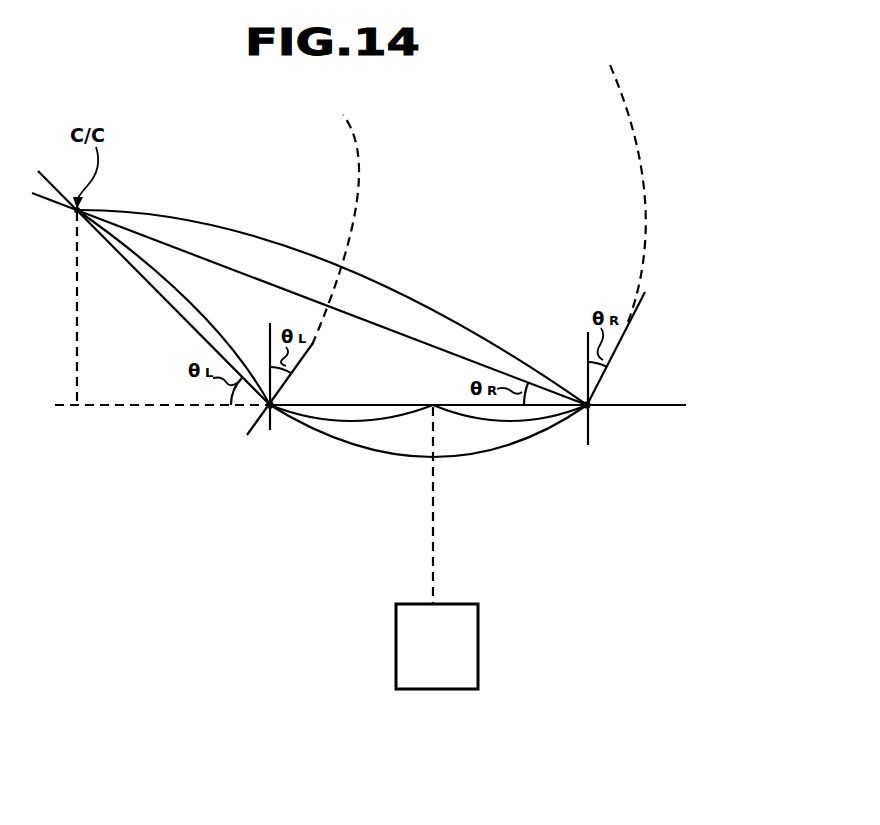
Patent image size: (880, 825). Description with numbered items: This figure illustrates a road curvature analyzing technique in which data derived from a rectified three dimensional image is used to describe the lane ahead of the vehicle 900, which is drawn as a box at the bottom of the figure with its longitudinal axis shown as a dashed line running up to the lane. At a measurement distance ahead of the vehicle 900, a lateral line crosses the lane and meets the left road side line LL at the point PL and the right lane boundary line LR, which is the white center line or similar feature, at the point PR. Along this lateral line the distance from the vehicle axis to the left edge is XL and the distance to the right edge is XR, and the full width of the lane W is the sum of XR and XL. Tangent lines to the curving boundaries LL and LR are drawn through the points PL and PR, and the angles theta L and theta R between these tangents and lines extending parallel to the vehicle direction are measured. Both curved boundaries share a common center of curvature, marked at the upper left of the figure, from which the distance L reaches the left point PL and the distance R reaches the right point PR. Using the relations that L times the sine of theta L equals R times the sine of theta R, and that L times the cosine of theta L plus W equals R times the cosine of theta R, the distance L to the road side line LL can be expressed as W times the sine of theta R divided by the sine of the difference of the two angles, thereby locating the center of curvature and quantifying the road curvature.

The vehicle 900 is at (479, 644).
The distance from center of curvature to left road side line L is at (154, 288).
The distance from center of curvature to right lane boundary R is at (332, 307).
The width of the lane W is at (428, 435).
The distance from vehicle center to road side line XL is at (351, 418).
The distance from vehicle center to right lane edge XR is at (510, 419).
The left intersection point PL is at (268, 407).
The right intersection point PR is at (589, 406).
The road side line LL is at (356, 162).
The right lane boundary line LR is at (644, 165).